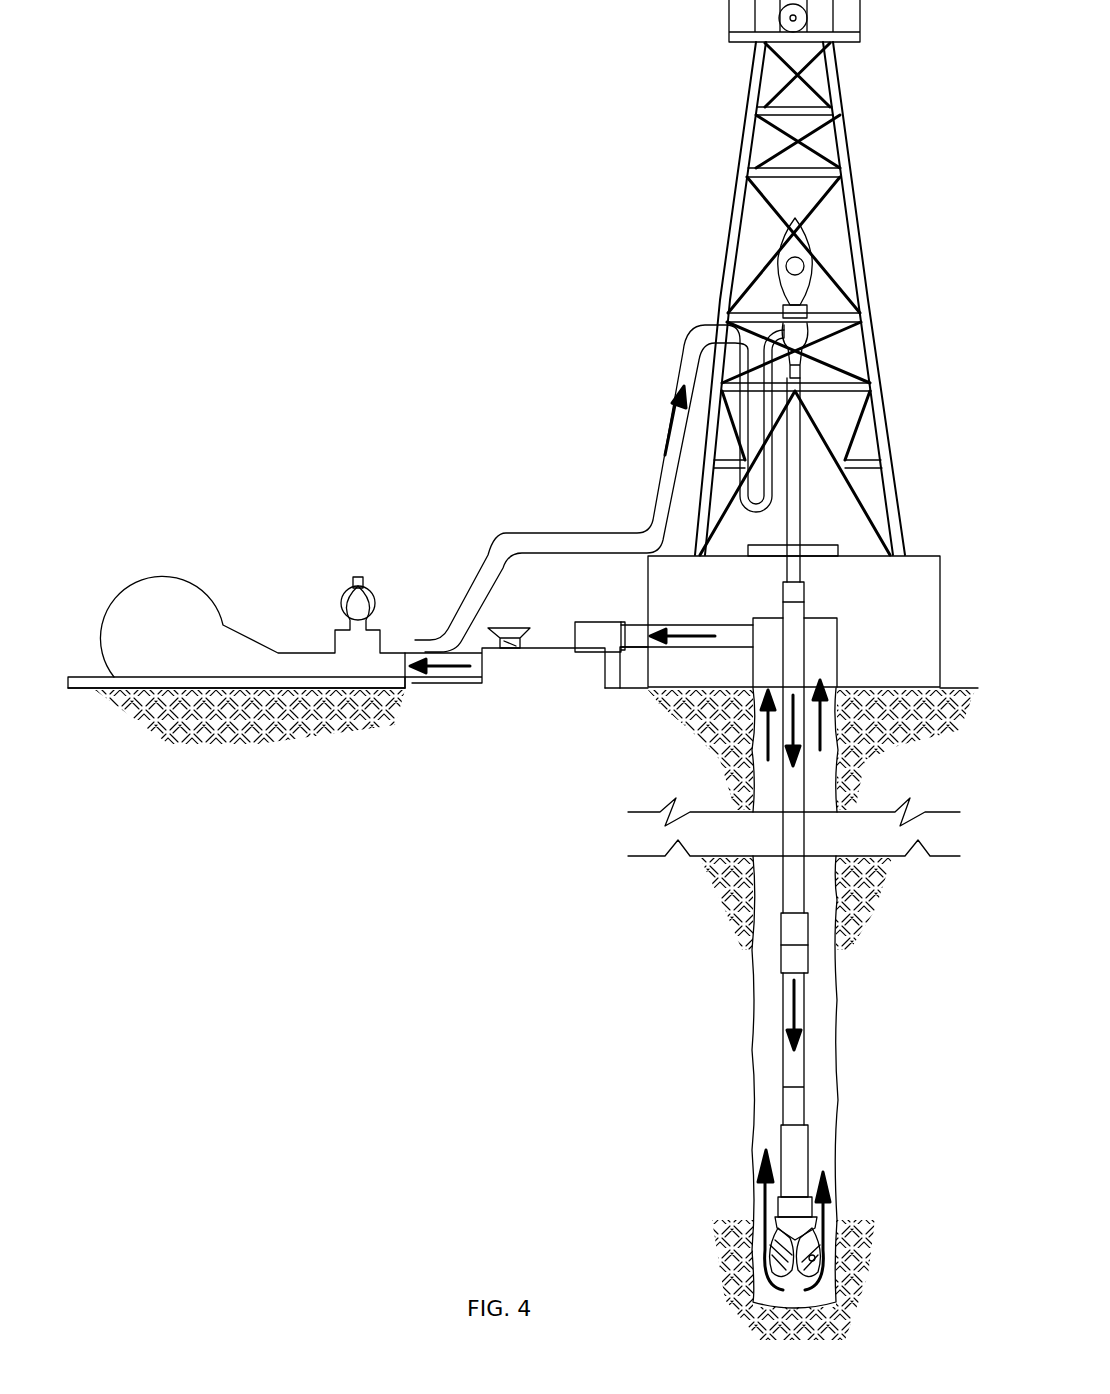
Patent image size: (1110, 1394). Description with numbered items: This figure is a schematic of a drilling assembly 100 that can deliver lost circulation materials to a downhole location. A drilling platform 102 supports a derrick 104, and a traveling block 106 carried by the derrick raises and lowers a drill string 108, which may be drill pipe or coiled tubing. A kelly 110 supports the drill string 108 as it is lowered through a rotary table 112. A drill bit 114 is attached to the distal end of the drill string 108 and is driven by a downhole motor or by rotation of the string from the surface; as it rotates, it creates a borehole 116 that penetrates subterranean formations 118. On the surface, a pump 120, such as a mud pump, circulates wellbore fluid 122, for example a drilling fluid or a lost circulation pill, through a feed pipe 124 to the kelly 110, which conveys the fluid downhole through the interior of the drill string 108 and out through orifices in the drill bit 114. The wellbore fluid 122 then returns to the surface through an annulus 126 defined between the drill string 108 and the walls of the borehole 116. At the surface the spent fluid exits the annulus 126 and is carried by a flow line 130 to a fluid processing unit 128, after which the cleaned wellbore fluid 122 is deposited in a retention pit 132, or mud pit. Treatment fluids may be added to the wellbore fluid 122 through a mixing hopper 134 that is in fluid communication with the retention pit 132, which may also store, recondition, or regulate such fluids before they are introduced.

The drilling assembly 100 is at (384, 208).
The drilling platform 102 is at (908, 632).
The derrick 104 is at (875, 298).
The traveling block 106 is at (812, 250).
The drill string 108 is at (783, 1068).
The kelly 110 is at (805, 523).
The rotary table 112 is at (840, 552).
The drill bit 114 is at (820, 1245).
The borehole 116 is at (822, 1022).
The subterranean formations 118 is at (645, 951).
The pump 120 is at (160, 578).
The wellbore fluid 122 is at (433, 620).
The feed pipe 124 is at (570, 532).
The annulus 126 is at (826, 1152).
The fluid processing unit 128 is at (598, 622).
The flow line 130 is at (742, 625).
The retention pit 132 is at (530, 690).
The mixing hopper 134 is at (510, 628).